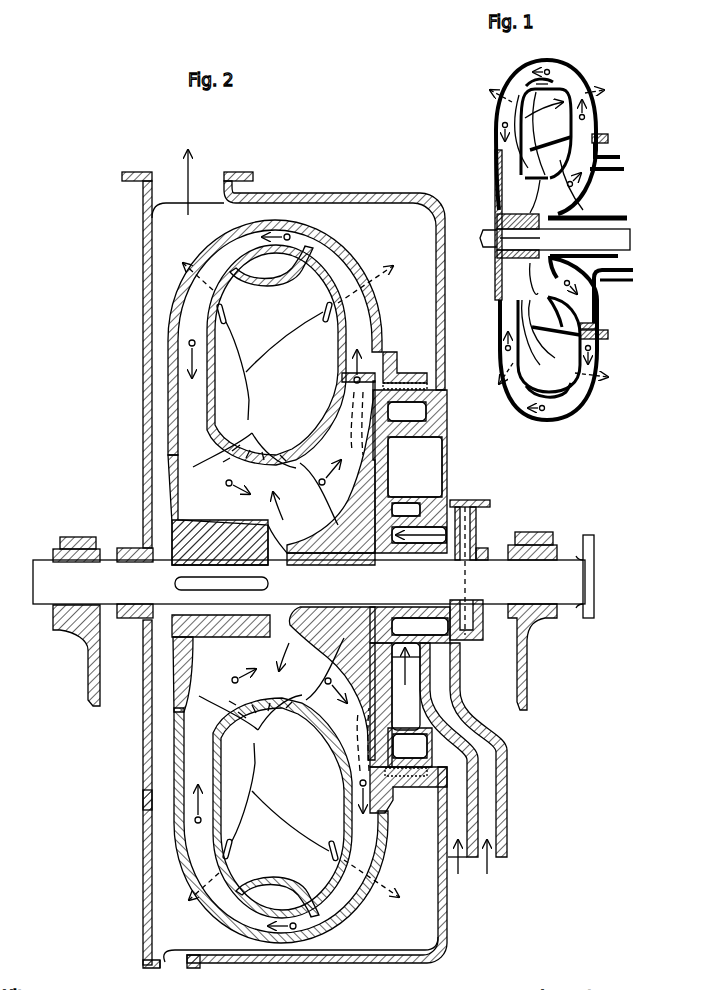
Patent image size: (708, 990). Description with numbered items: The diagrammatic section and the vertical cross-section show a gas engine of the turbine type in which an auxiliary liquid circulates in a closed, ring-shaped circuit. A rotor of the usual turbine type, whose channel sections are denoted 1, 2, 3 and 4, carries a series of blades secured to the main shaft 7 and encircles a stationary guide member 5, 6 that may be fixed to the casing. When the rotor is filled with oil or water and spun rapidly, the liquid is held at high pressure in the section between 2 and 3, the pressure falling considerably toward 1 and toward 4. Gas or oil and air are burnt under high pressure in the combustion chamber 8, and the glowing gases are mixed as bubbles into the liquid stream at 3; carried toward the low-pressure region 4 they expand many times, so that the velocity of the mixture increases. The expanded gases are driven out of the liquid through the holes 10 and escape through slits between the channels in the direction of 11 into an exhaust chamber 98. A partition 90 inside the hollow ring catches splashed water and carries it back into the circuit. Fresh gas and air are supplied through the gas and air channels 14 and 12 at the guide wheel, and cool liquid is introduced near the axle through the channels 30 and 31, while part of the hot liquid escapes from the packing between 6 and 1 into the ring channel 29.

In FIG. 2, the rotor channel section 1 is at (366, 371).
In FIG. 1, the rotor channel section 1 is at (585, 131).
In FIG. 2, the rotor channel section 2 is at (302, 252).
In FIG. 1, the rotor channel section 2 is at (556, 86).
In FIG. 2, the rotor channel section 3 is at (228, 268).
In FIG. 1, the rotor channel section 3 is at (522, 87).
In FIG. 2, the rotor channel section 4 is at (256, 581).
In FIG. 1, the rotor channel section 4 is at (513, 165).
In FIG. 2, the stationary guide member 5 is at (321, 576).
In FIG. 1, the stationary guide member 5 is at (556, 259).
In FIG. 2, the stationary guide member 6 is at (389, 436).
In FIG. 1, the stationary guide member 6 is at (603, 153).
In FIG. 2, the main shaft 7 is at (313, 576).
In FIG. 1, the main shaft 7 is at (607, 243).
In FIG. 2, the combustion chamber 8 is at (277, 558).
In FIG. 1, the combustion chamber 8 is at (543, 90).
In FIG. 2, the holes 10 is at (291, 581).
In FIG. 1, the holes 10 is at (527, 293).
In FIG. 2, the exhaust outlet 11 is at (282, 581).
In FIG. 1, the exhaust outlet 11 is at (547, 240).
In FIG. 2, the air channel 12 is at (425, 612).
In FIG. 1, the air channel 12 is at (620, 168).
In FIG. 2, the gas channel 14 is at (449, 699).
In FIG. 1, the gas channel 14 is at (620, 275).
In FIG. 2, the ring channel 29 is at (424, 413).
In FIG. 2, the cooling liquid channel 30 is at (467, 512).
In FIG. 1, the cooling liquid channel 30 is at (610, 224).
In FIG. 2, the cooling liquid channel 31 is at (318, 553).
In FIG. 1, the partition 90 is at (555, 228).
In FIG. 2, the exhaust chamber 98 is at (150, 803).